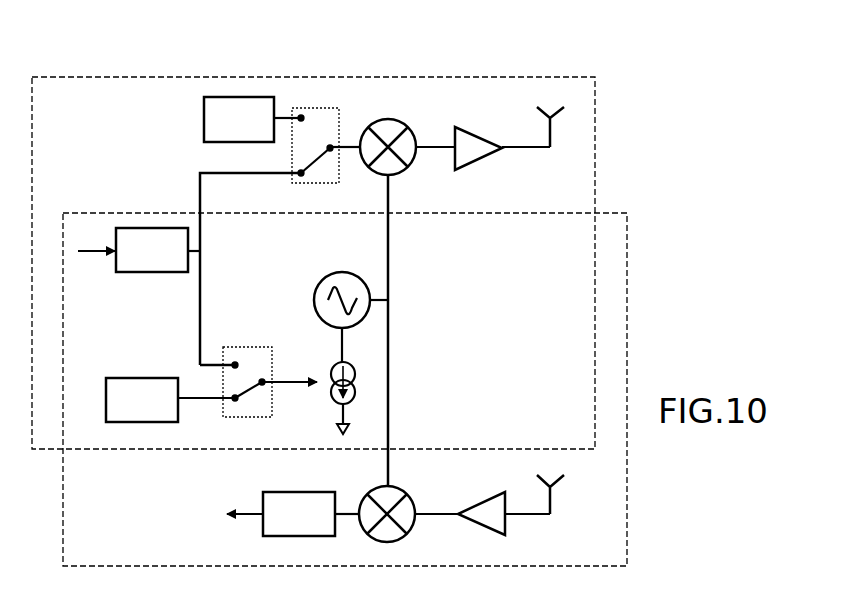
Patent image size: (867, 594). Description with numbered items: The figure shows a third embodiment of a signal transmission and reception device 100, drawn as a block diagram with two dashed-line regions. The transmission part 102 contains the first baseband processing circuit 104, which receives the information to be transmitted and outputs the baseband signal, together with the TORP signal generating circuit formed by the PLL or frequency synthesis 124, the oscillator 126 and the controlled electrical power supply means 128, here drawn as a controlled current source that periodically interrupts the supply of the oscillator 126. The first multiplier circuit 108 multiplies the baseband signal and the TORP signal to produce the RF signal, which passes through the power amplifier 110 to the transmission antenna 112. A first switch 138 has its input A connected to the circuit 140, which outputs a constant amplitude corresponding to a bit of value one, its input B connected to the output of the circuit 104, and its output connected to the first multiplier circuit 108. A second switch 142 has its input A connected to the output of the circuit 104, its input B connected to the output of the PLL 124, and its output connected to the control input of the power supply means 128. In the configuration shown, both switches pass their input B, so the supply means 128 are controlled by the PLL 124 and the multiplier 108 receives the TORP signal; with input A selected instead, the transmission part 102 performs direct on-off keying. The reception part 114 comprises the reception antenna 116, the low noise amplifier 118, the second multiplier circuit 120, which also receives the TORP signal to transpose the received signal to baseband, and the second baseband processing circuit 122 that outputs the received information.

The signal transmission and reception device 100 is at (650, 98).
The transmission part 102 is at (520, 77).
The first baseband signal processing circuit 104 is at (148, 228).
The first multiplier circuit 108 is at (392, 119).
The power amplifier 110 is at (490, 140).
The transmission antenna 112 is at (552, 137).
The reception part 114 is at (628, 268).
The reception antenna 116 is at (552, 500).
The low noise amplifier 118 is at (492, 495).
The second multiplier circuit 120 is at (375, 488).
The second baseband processing circuit 122 is at (263, 495).
The PLL or frequency synthesis 124 is at (148, 378).
The voltage controlled oscillator 126 is at (338, 272).
The controlled electrical power supply means 128 is at (330, 368).
The first switch 138 is at (330, 108).
The constant amplitude signal circuit 140 is at (240, 97).
The second switch 142 is at (262, 347).